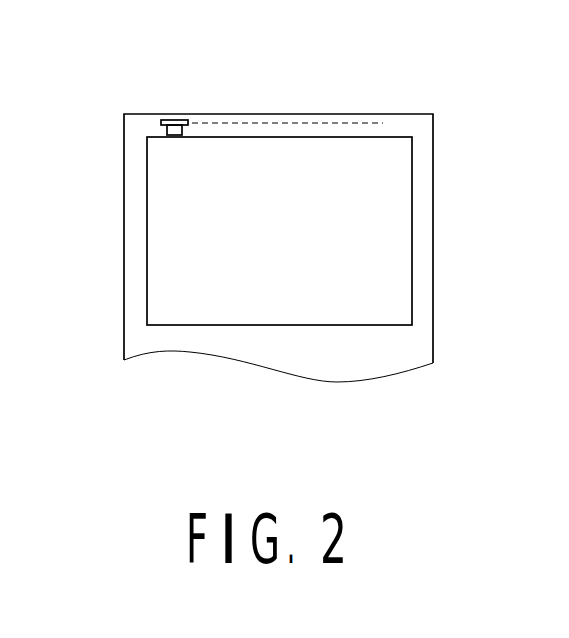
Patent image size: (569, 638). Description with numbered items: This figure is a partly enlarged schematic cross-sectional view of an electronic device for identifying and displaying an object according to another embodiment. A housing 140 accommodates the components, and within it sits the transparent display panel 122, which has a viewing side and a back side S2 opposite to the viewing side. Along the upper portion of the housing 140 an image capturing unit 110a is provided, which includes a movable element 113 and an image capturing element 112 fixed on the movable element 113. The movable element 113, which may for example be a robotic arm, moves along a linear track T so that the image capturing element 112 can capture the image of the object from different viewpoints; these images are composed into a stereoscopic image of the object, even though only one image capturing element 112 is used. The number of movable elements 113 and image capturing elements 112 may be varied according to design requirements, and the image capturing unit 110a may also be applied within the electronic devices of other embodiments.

The housing 140 is at (418, 226).
The transparent display panel 122 is at (375, 296).
The linear track T is at (368, 123).
The image capturing unit 110a is at (256, 79).
The movable element 113 is at (166, 122).
The image capturing element 112 is at (179, 132).
The back side S2 is at (203, 262).